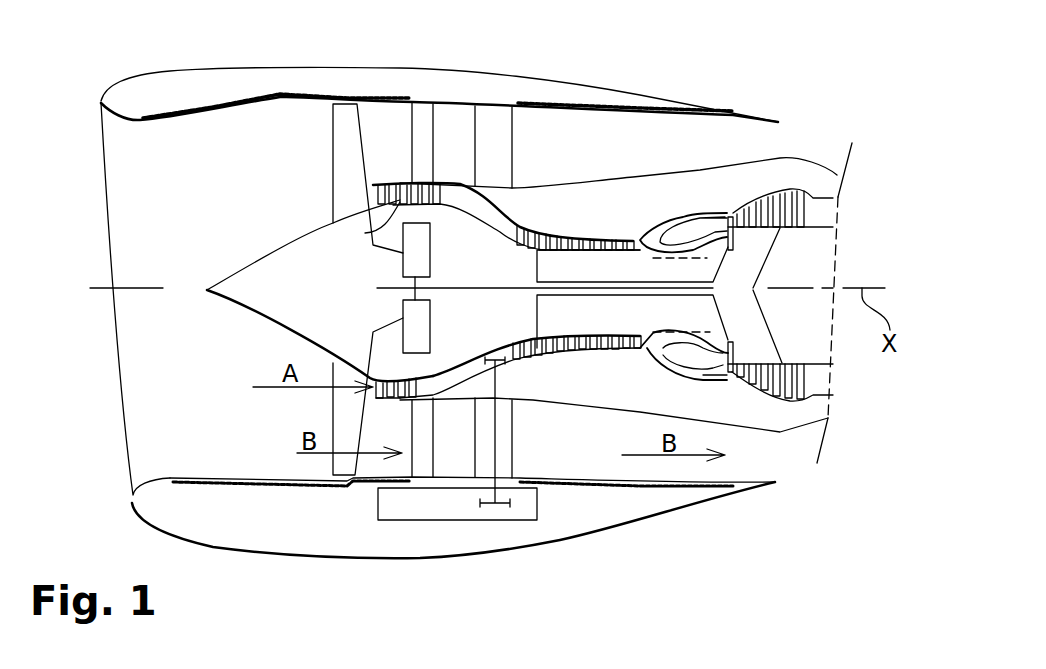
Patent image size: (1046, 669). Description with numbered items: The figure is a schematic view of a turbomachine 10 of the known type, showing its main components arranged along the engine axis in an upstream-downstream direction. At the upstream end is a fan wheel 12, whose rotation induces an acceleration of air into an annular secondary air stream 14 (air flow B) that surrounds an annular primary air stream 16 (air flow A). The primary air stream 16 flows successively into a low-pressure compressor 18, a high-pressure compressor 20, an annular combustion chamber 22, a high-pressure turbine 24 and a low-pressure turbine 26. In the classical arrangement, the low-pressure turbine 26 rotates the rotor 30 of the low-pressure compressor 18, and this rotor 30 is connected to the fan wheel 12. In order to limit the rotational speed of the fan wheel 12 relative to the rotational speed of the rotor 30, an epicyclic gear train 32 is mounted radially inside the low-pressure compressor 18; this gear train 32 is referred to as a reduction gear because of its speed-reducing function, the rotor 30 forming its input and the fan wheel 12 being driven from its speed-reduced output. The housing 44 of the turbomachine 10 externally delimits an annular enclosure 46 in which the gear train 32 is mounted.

The turbomachine 10 is at (668, 68).
The fan wheel 12 is at (333, 143).
The annular secondary air stream 14 is at (548, 132).
The annular primary air stream 16 is at (497, 223).
The low-pressure compressor 18 is at (397, 181).
The high-pressure compressor 20 is at (570, 236).
The annular combustion chamber 22 is at (697, 213).
The high-pressure turbine 24 is at (730, 215).
The low-pressure turbine 26 is at (772, 195).
The rotor of the low-pressure compressor 30 is at (440, 288).
The epicyclic gear train 32 is at (437, 327).
The housing 44 is at (365, 233).
The annular enclosure 46 is at (443, 261).